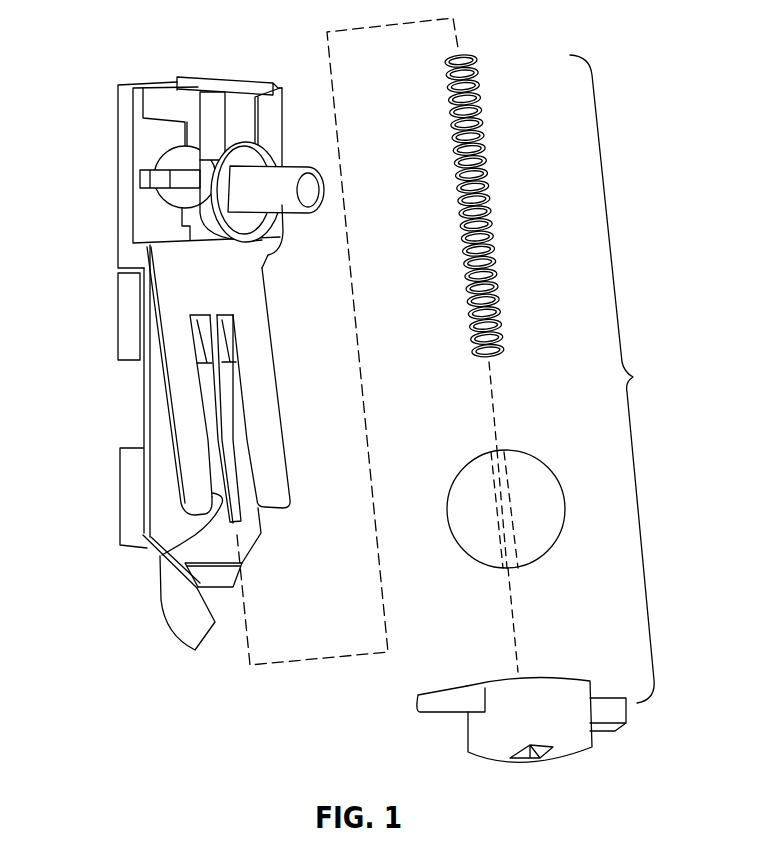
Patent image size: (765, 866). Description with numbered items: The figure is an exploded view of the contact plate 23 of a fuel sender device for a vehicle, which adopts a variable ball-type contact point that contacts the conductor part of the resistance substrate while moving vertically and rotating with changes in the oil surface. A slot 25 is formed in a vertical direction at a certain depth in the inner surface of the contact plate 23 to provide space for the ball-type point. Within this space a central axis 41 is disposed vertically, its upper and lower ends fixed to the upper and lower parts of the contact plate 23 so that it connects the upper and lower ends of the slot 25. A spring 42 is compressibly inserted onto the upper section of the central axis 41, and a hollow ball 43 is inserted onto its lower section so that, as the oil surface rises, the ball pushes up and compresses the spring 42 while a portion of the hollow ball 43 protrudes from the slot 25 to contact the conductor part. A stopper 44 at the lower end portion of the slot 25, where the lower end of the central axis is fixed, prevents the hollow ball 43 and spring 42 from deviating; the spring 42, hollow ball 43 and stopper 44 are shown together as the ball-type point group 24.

The contact plate 23 is at (163, 427).
The stopper assembly 24 is at (551, 408).
The slot 25 is at (162, 554).
The central axis 41 is at (230, 473).
The spring 42 is at (500, 311).
The hollow ball 43 is at (536, 482).
The stopper 44 is at (546, 690).